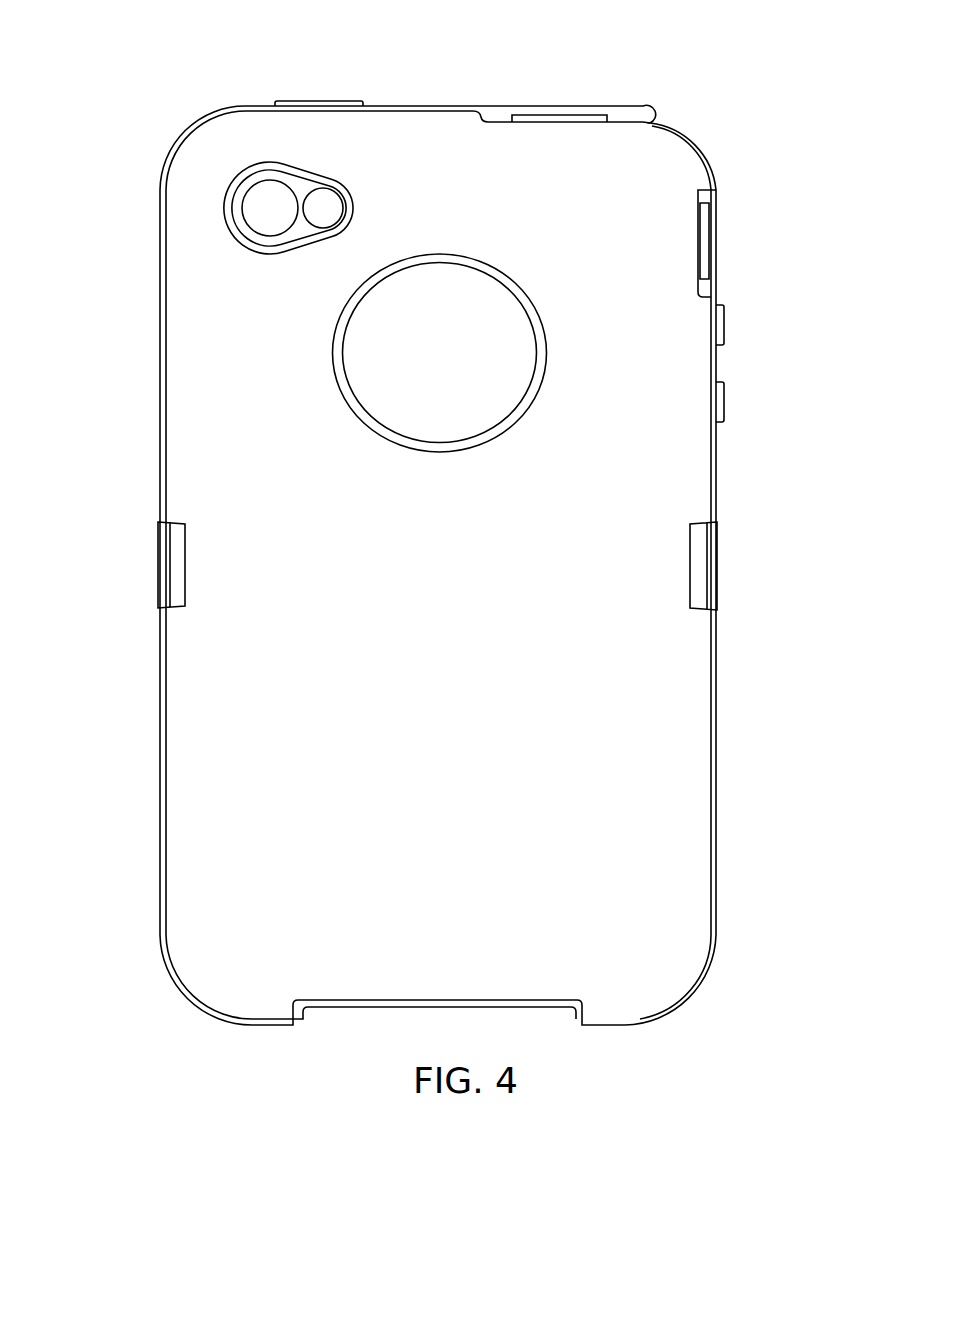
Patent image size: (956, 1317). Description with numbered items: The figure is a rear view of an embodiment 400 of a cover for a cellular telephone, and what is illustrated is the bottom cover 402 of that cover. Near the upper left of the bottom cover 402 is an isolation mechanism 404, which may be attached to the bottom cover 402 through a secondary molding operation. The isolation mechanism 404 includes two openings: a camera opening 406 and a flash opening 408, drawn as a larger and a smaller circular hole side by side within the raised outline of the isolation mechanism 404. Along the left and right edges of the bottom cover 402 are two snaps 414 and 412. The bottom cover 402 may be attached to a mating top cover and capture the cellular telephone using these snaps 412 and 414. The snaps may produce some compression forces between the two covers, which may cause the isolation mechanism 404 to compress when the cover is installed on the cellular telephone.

The embodiment 400 is at (290, 1061).
The bottom cover 402 is at (643, 806).
The isolation mechanism 404 is at (293, 187).
The camera opening 406 is at (264, 215).
The flash opening 408 is at (326, 209).
The snap 412 is at (708, 560).
The snap 414 is at (163, 572).